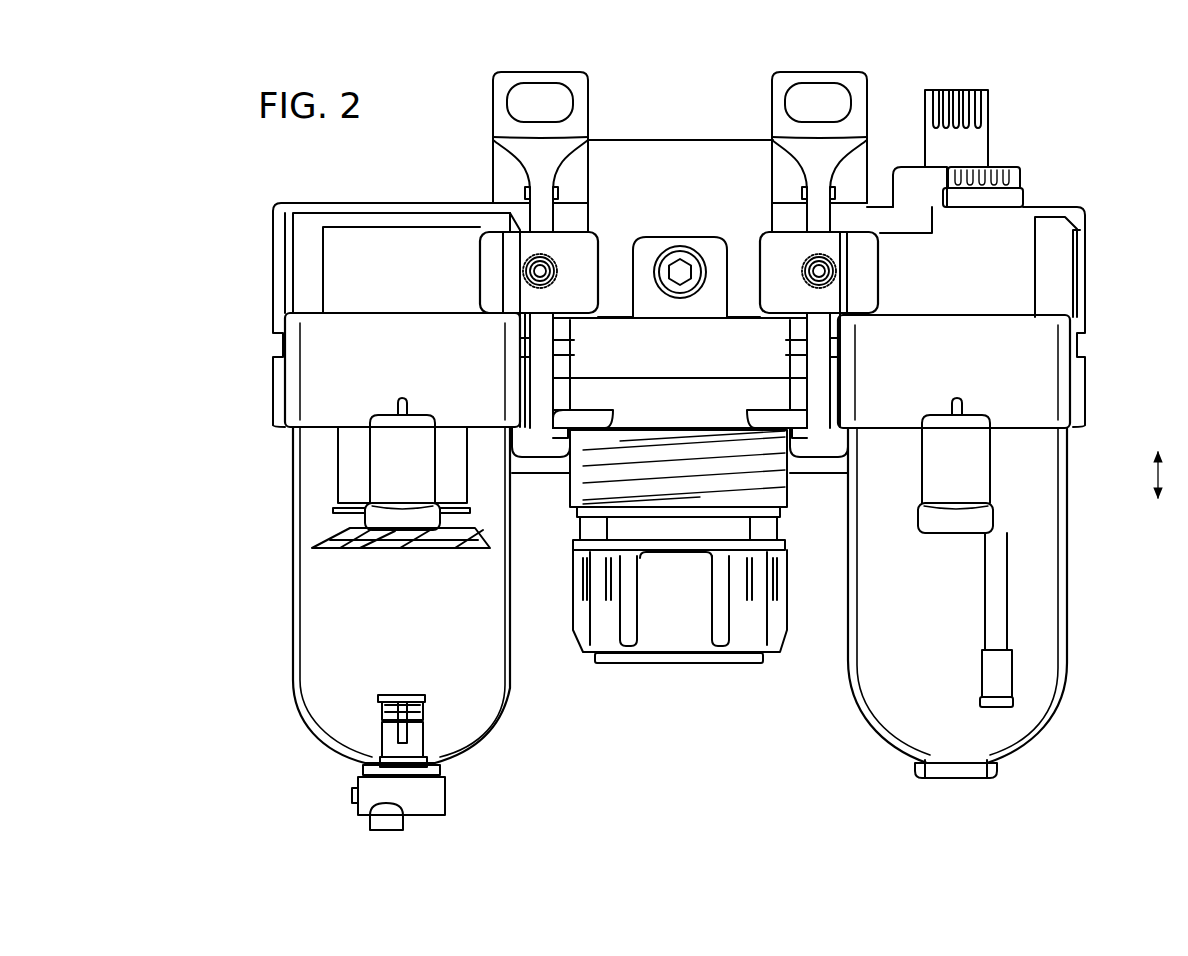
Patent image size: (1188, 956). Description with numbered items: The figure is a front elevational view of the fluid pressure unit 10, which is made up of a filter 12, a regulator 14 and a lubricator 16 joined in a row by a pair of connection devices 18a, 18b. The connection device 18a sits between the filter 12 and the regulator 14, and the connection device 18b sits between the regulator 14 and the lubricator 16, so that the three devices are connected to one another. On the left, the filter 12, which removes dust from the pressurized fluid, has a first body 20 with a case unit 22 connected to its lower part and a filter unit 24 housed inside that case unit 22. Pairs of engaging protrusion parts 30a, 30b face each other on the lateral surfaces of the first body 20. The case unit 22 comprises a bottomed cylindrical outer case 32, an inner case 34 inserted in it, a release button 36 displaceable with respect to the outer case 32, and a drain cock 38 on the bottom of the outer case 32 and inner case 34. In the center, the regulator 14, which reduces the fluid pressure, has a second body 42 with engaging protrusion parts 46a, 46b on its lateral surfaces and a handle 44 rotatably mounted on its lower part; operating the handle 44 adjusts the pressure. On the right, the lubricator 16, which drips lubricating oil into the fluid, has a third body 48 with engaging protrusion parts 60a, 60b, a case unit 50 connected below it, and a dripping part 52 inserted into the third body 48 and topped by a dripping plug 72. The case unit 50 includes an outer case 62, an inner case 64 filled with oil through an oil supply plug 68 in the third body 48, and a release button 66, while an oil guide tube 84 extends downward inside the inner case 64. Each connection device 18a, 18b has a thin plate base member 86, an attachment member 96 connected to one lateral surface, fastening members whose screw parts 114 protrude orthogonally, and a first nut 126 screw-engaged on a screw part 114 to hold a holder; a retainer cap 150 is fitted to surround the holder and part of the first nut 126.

The fluid pressure unit 10 is at (333, 180).
The filter 12 is at (270, 670).
The regulator 14 is at (606, 672).
The lubricator 16 is at (1075, 707).
The connection device 18a is at (490, 108).
The connection device 18b is at (768, 105).
The first body 20 is at (266, 240).
The case unit 22 is at (488, 762).
The filter unit 24 is at (328, 462).
The engaging protrusion parts 30a is at (290, 274).
The engaging protrusion parts 30b is at (507, 228).
The outer case 32 is at (295, 617).
The inner case 34 is at (318, 575).
The release button 36 is at (380, 445).
The drain cock 38 is at (432, 805).
The second body 42 is at (655, 136).
The handle 44 is at (677, 635).
The engaging protrusion parts 46a is at (585, 228).
The engaging protrusion parts 46b is at (760, 228).
The third body 48 is at (1092, 208).
The case unit 50 is at (868, 780).
The dripping part 52 is at (995, 97).
The engaging protrusion parts 60a is at (870, 205).
The engaging protrusion parts 60b is at (1072, 270).
The outer case 62 is at (1043, 762).
The inner case 64 is at (1047, 600).
The release button 66 is at (937, 452).
The oil supply plug 68 is at (988, 200).
The dripping plug 72 is at (978, 143).
The oil guide tube 84 is at (993, 578).
The base member 86 is at (533, 380).
The attachment member 96 is at (529, 80).
The screw part 114 is at (543, 280).
The first nut 126 is at (525, 270).
The retainer cap 150 is at (490, 290).